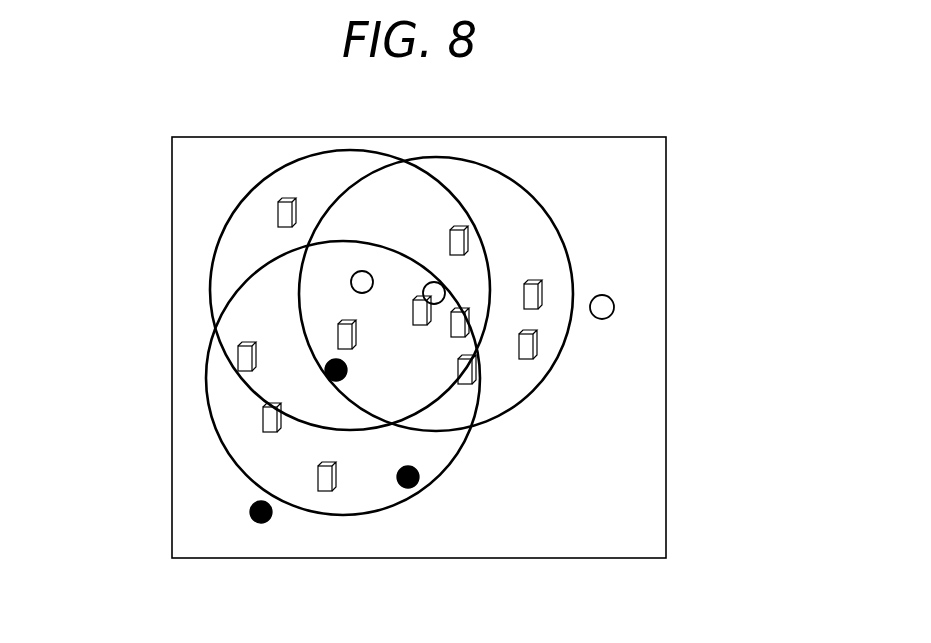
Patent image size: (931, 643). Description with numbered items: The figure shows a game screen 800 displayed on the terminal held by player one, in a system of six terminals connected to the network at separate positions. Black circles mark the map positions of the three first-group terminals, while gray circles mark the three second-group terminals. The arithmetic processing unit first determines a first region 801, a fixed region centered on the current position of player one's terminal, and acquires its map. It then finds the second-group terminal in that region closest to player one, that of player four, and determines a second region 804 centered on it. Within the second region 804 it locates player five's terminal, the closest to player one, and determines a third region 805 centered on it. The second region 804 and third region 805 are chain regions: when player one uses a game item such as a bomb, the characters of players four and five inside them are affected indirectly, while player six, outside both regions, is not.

The game screen 800 is at (602, 134).
The first region 801 is at (228, 295).
The second region 804 is at (303, 155).
The third region 805 is at (563, 240).